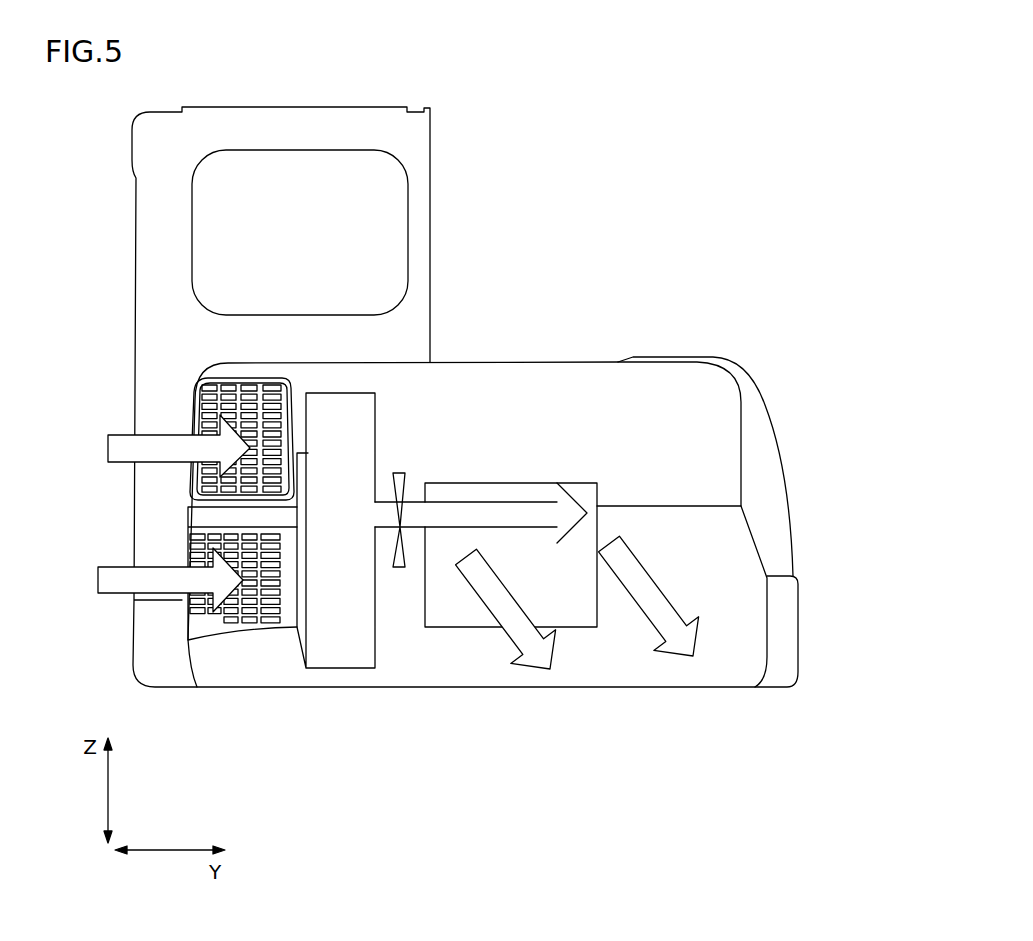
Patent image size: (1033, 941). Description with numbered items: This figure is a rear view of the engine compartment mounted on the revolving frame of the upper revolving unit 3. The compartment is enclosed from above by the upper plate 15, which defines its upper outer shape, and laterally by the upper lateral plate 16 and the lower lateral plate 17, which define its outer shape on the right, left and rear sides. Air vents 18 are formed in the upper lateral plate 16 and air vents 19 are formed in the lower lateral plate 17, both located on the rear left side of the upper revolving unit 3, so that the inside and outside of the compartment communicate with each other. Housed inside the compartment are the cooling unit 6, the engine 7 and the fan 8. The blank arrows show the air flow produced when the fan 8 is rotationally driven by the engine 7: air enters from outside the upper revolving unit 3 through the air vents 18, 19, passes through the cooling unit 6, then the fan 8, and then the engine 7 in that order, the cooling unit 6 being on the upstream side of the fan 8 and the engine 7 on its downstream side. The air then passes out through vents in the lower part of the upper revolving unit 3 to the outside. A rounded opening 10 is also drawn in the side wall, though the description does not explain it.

The upper revolving unit 3 is at (700, 135).
The cooling unit 6 is at (338, 668).
The engine 7 is at (570, 590).
The fan 8 is at (402, 570).
The opening window 10 is at (215, 222).
The upper plate 15 is at (524, 362).
The upper lateral plate 16 is at (712, 432).
The lower lateral plate 17 is at (727, 590).
The air vents 18 is at (197, 410).
The air vents 19 is at (188, 547).